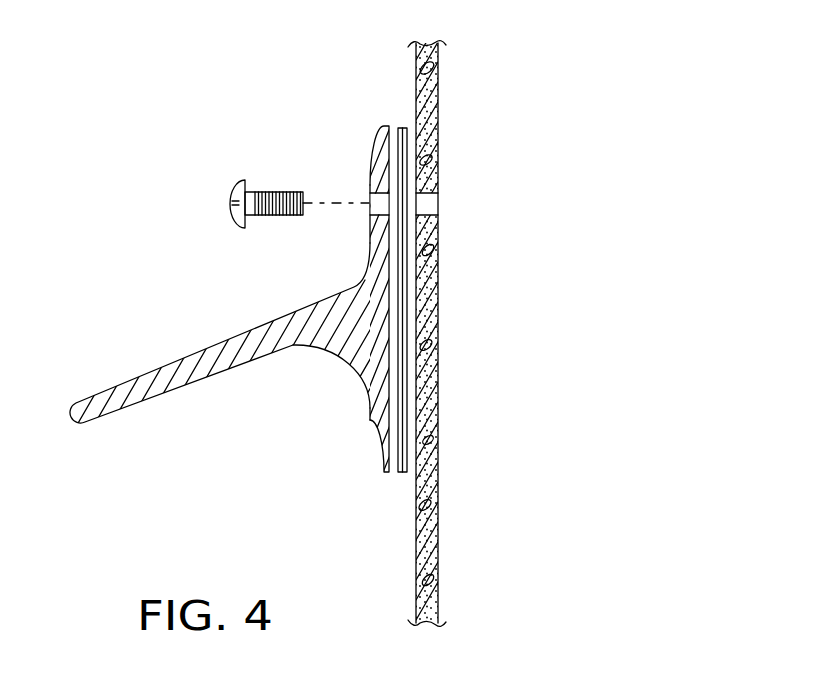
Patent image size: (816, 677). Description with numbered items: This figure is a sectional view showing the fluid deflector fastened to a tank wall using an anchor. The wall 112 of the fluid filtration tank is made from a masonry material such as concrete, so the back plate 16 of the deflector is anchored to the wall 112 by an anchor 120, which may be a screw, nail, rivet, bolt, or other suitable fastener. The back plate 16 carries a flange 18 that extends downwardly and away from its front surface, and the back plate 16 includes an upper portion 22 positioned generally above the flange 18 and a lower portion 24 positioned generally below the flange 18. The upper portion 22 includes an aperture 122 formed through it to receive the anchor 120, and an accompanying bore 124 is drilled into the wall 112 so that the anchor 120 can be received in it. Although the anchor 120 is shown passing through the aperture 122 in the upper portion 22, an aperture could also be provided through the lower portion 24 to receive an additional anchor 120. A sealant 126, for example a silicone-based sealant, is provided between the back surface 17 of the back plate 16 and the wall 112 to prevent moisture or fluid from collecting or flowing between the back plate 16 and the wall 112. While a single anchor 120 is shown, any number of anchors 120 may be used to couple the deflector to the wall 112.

The wall 112 is at (430, 90).
The bore 124 is at (423, 197).
The sealant 126 is at (402, 127).
The back surface 17 is at (390, 303).
The upper portion 22 is at (371, 160).
The aperture 122 is at (371, 205).
The lower portion 24 is at (378, 443).
The flange 18 is at (129, 372).
The back plate 16 is at (362, 406).
The anchor 120 is at (265, 182).